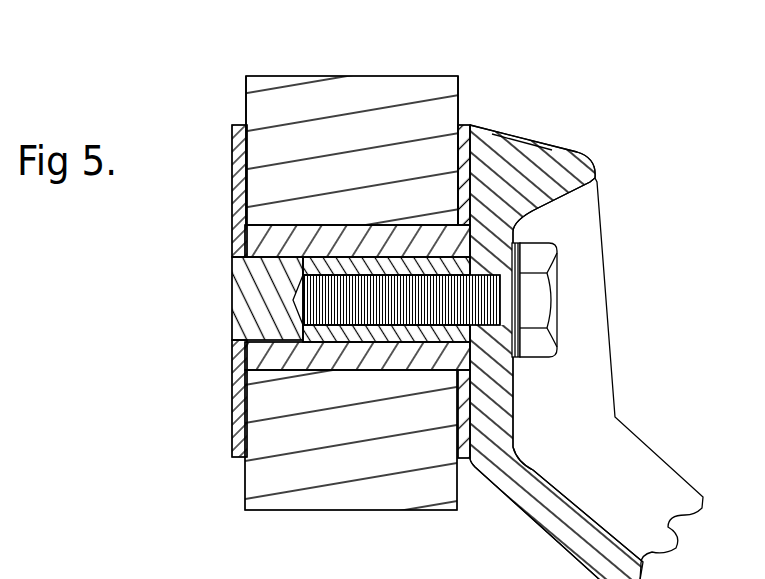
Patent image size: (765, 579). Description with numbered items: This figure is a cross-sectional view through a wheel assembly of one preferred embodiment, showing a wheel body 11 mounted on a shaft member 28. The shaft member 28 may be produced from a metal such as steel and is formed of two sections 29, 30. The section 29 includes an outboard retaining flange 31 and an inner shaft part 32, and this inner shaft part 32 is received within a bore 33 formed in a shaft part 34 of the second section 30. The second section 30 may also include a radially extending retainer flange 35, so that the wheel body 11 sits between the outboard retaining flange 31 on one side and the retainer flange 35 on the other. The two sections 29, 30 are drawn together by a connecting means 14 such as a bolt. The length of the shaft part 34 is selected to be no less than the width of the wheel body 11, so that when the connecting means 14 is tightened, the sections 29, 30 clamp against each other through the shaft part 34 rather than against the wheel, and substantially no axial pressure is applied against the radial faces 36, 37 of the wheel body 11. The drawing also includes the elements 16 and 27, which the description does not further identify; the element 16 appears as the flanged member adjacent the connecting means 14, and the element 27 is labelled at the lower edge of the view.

The wheel body 11 is at (382, 103).
The connecting means 14 is at (545, 302).
The bracket flange 16 is at (512, 402).
The lower member 27 is at (310, 576).
The shaft member 28 is at (222, 429).
The section 29 is at (287, 290).
The second section 30 is at (344, 352).
The outboard retaining flange 31 is at (232, 168).
The inner shaft part 32 is at (243, 257).
The bore 33 is at (245, 327).
The shaft part 34 is at (421, 350).
The retainer flange 35 is at (463, 125).
The radial face 36 is at (247, 98).
The radial face 37 is at (458, 98).